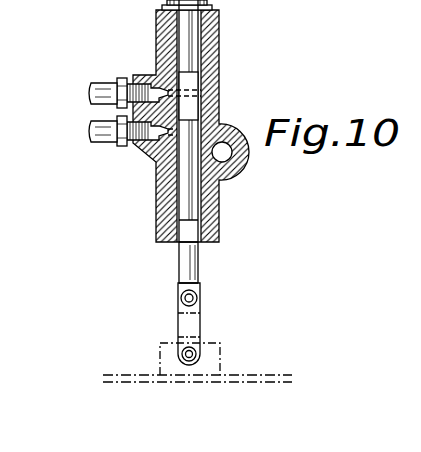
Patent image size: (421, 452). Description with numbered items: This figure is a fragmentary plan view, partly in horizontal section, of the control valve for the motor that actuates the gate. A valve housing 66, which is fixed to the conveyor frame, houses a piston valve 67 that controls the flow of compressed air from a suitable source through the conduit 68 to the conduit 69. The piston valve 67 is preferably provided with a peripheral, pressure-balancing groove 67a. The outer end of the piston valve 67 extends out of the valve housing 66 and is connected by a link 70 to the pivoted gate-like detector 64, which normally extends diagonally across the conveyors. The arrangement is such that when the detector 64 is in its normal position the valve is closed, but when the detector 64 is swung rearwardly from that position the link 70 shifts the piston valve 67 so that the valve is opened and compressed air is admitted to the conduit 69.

The pivoted gate-like detector 64 is at (243, 373).
The valve housing 66 is at (214, 59).
The piston valve 67 is at (223, 117).
The peripheral pressure-balancing groove 67a is at (214, 83).
The conduit 68 is at (107, 82).
The conduit 69 is at (105, 136).
The link 70 is at (202, 313).